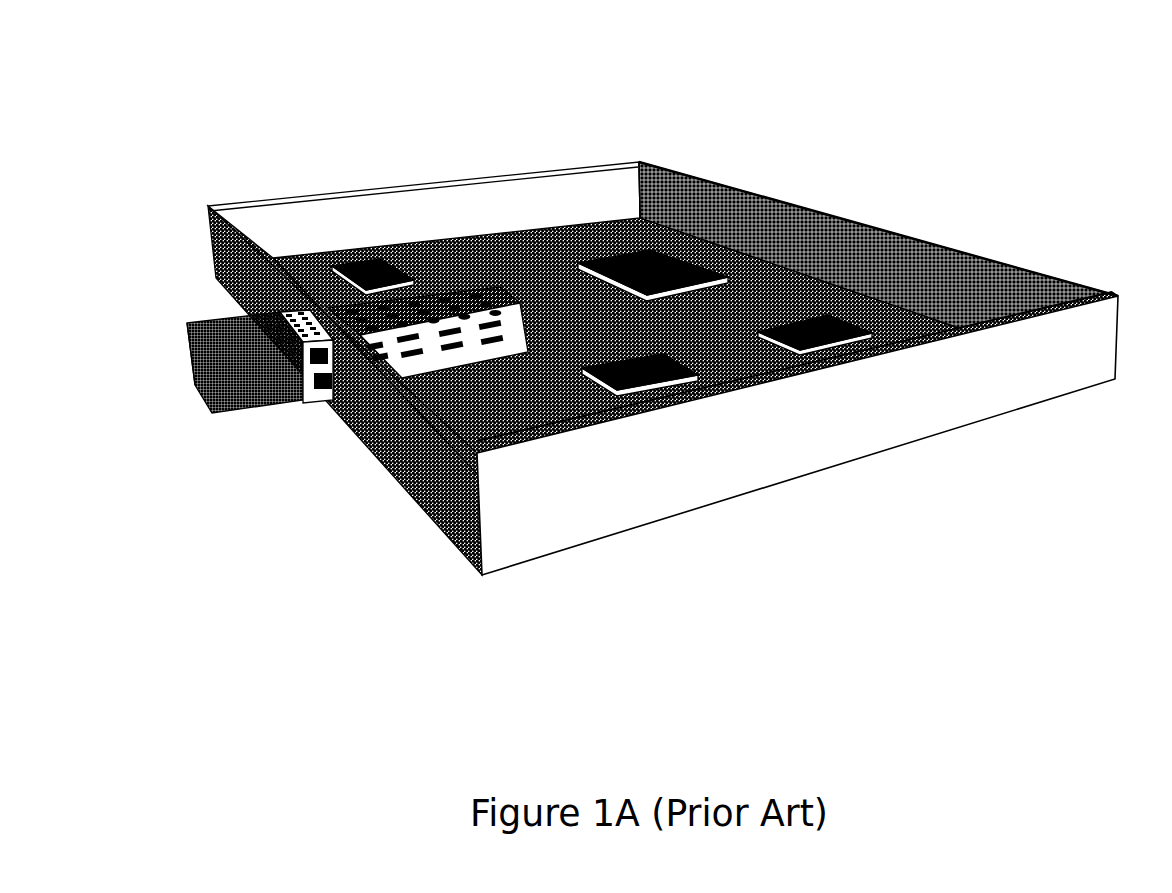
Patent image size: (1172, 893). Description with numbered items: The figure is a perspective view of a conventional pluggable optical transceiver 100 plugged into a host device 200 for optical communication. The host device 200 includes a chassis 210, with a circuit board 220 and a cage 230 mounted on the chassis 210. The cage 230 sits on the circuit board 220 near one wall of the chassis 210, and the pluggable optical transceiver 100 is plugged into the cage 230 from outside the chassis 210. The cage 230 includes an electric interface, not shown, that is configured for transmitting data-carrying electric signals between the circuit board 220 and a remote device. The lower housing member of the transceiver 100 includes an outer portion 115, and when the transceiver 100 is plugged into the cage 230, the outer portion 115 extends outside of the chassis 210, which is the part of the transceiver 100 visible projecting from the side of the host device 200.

The pluggable optical transceiver 100 is at (214, 367).
The outer portion 115 is at (211, 317).
The host device 200 is at (663, 305).
The chassis 210 is at (871, 438).
The circuit board 220 is at (806, 282).
The cage 230 is at (457, 275).